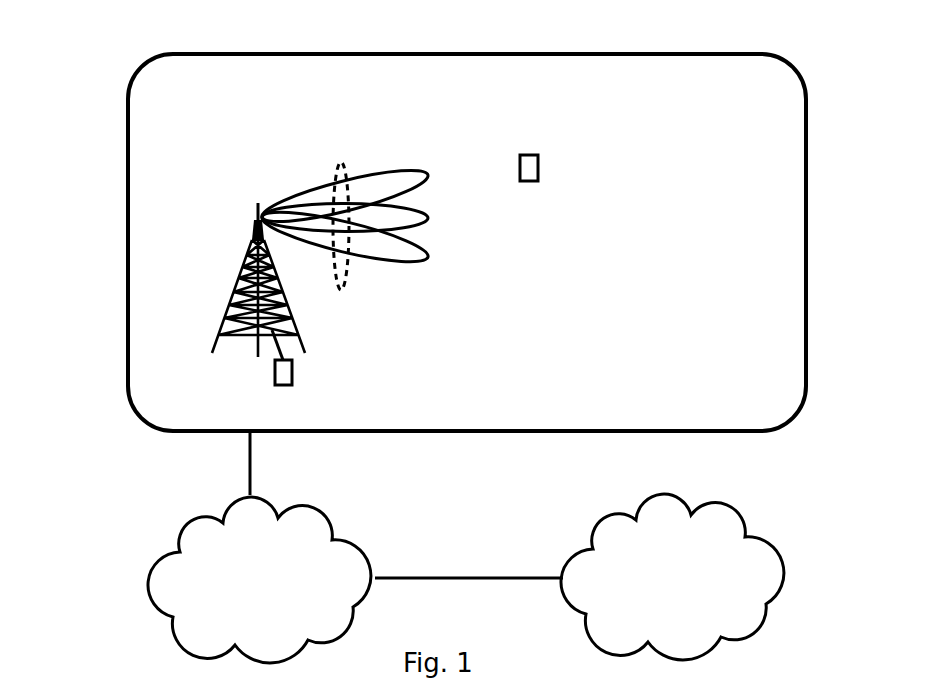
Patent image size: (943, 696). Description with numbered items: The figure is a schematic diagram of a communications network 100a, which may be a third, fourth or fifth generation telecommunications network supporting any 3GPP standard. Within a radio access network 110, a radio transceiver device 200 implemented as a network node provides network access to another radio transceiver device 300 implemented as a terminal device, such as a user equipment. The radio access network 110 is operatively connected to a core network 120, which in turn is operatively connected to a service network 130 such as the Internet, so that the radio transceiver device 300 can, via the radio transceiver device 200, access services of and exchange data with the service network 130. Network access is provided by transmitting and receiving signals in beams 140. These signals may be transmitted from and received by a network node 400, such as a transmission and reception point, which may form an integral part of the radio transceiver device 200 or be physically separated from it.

The communications network 100a is at (110, 47).
The radio access network 110 is at (199, 96).
The core network 120 is at (289, 598).
The service network 130 is at (703, 595).
The beams 140 is at (342, 162).
The radio transceiver device 200 is at (273, 379).
The radio transceiver device 300 is at (538, 170).
The network node 400 is at (256, 218).